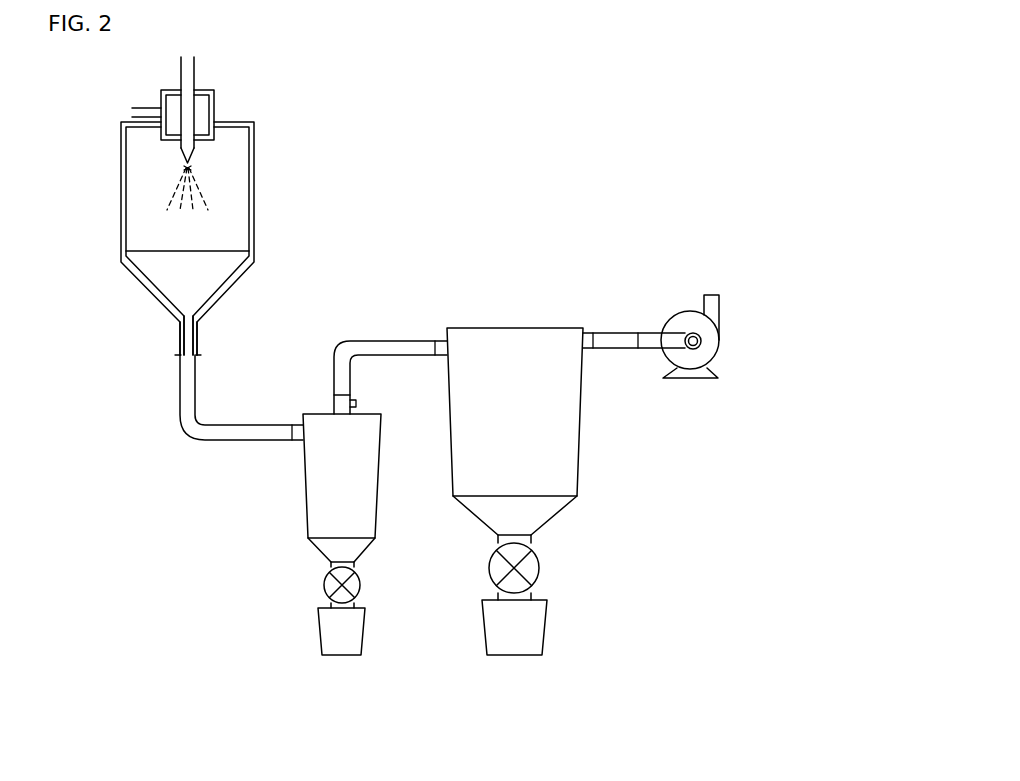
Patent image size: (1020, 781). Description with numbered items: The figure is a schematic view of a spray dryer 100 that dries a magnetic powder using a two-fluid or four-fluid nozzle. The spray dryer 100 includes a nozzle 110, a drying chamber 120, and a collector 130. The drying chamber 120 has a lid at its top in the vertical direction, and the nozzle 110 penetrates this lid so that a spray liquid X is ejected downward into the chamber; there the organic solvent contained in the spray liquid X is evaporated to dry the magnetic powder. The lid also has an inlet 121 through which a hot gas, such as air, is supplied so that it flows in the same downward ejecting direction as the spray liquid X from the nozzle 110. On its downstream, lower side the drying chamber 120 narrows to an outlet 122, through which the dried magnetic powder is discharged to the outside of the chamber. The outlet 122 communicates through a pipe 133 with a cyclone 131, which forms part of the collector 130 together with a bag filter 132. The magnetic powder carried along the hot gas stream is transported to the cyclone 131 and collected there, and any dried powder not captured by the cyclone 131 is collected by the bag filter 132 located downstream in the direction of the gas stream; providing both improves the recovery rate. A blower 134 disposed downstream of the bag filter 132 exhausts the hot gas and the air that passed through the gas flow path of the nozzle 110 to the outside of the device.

The spray dryer 100 is at (312, 91).
The nozzle 110 is at (188, 73).
The drying chamber 120 is at (252, 208).
The inlet 121 is at (200, 142).
The outlet 122 is at (185, 335).
The collector 130 is at (451, 678).
The cyclone 131 is at (330, 628).
The bag filter 132 is at (500, 628).
The pipe 133 is at (187, 390).
The blower 134 is at (707, 352).
The spray liquid X is at (173, 192).